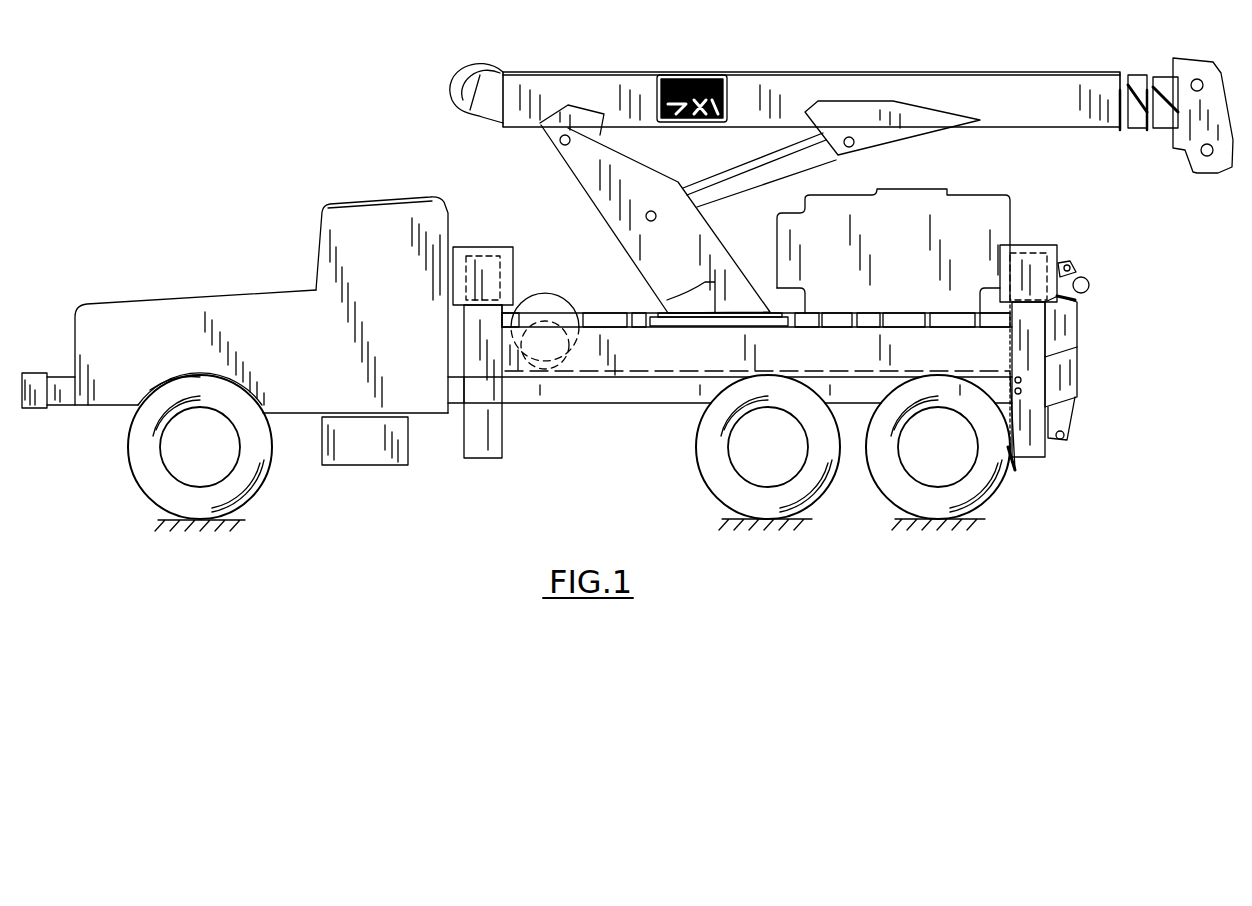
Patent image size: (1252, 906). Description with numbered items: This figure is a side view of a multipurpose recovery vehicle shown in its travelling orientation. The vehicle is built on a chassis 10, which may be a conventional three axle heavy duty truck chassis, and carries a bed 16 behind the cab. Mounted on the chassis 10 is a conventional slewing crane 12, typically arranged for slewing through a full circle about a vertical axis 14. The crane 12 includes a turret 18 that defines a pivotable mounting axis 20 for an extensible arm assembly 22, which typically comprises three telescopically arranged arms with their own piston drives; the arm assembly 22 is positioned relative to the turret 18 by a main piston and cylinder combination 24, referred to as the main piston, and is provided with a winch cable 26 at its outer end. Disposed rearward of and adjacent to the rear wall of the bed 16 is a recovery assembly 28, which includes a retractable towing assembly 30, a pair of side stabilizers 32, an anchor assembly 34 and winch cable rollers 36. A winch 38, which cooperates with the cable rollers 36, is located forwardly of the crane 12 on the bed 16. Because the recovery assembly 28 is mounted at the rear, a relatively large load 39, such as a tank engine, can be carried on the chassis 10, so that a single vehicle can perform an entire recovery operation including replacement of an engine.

The chassis 10 is at (567, 396).
The slewing crane 12 is at (596, 238).
The vertical axis 14 is at (669, 302).
The bed 16 is at (648, 382).
The turret 18 is at (589, 190).
The pivotable mounting axis 20 is at (560, 144).
The extensible arm assembly 22 is at (773, 78).
The main piston and cylinder combination 24 is at (730, 184).
The winch cable 26 is at (1215, 170).
The recovery assembly 28 is at (1097, 316).
The retractable towing assembly 30 is at (1078, 358).
The side stabilizers 32 is at (1040, 270).
The anchor assembly 34 is at (1008, 474).
The winch cable rollers 36 is at (1022, 385).
The winch 38 is at (552, 332).
The load 39 is at (1011, 221).